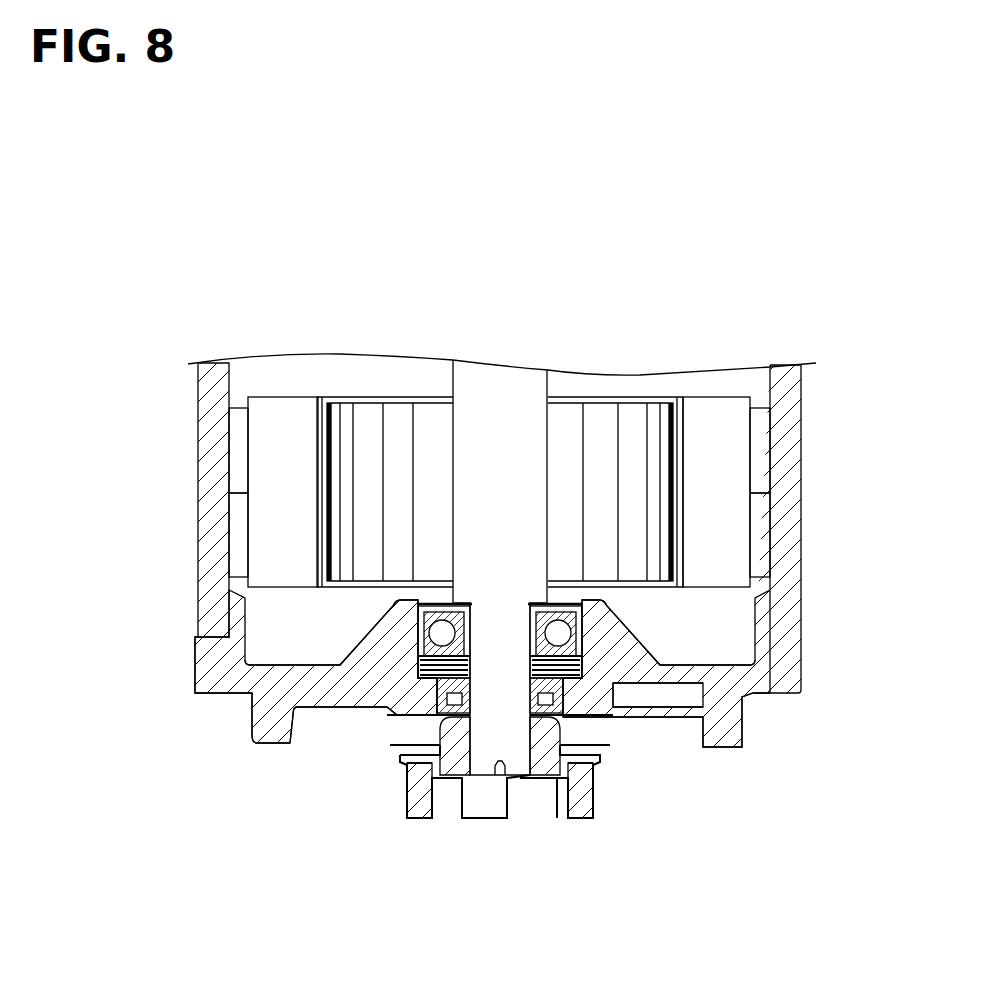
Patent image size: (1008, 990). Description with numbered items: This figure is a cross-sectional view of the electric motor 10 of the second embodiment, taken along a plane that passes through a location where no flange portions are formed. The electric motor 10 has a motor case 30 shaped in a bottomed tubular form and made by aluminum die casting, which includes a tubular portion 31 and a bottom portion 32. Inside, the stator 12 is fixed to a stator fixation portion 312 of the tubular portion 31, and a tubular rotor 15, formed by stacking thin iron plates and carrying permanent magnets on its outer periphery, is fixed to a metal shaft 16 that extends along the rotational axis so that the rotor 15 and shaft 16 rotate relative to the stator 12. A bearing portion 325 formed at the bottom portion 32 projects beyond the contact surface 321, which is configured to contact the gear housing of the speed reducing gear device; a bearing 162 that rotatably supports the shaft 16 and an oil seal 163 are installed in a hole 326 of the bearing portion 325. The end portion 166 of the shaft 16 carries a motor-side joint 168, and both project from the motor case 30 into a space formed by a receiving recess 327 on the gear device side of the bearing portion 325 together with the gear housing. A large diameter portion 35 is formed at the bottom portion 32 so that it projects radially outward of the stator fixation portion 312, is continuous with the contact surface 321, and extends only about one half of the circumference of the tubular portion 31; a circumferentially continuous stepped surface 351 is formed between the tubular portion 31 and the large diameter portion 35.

The electric motor 10 is at (243, 893).
The stator 12 is at (242, 440).
The rotor 15 is at (370, 470).
The shaft 16 is at (468, 538).
The motor case 30 is at (816, 396).
The tubular portion 31 is at (790, 467).
The stator fixation portion 312 is at (205, 508).
The bottom portion 32 is at (242, 695).
The contact surface 321 is at (204, 695).
The bearing portion 325 is at (367, 672).
The hole 326 is at (413, 630).
The receiving recess 327 is at (307, 720).
The large diameter portion 35 is at (193, 665).
The stepped surface 351 is at (193, 638).
The bearing 162 is at (565, 623).
The oil seal 163 is at (560, 693).
The end portion 166 is at (523, 778).
The motor-side joint 168 is at (585, 797).